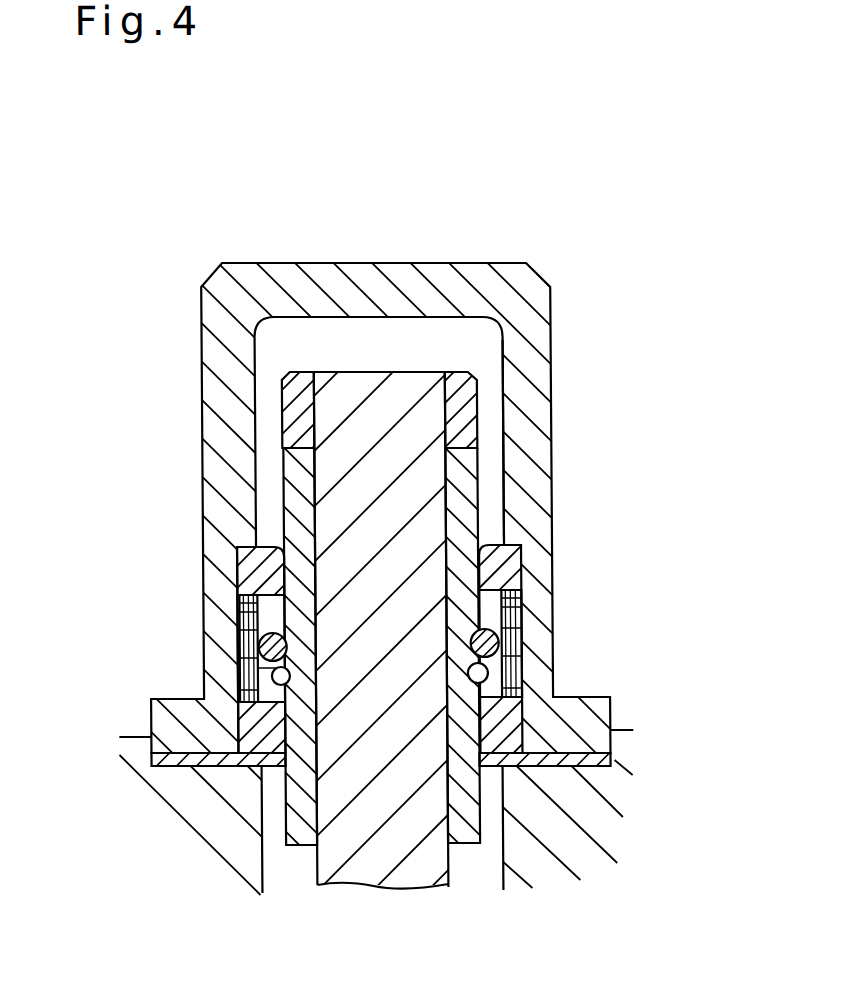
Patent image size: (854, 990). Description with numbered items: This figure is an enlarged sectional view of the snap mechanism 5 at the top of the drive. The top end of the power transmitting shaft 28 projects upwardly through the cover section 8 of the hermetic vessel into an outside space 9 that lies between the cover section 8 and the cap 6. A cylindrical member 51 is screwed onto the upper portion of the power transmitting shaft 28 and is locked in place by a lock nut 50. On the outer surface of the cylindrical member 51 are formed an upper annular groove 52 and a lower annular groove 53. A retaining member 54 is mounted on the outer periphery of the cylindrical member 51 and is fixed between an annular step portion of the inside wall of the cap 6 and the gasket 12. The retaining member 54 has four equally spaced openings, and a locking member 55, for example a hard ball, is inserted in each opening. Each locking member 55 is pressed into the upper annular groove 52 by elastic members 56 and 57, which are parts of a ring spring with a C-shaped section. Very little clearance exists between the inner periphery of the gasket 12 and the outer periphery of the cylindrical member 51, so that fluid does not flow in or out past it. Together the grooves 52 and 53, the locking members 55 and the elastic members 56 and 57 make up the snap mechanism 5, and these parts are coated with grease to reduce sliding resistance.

The cap 6 is at (392, 277).
The snap mechanism 5 is at (268, 512).
The outside space 9 is at (487, 380).
The lock nut 50 is at (470, 407).
The power transmitting shaft 28 is at (415, 480).
The cylindrical member 51 is at (465, 521).
The retaining member 54 is at (250, 558).
The elastic member 56 is at (243, 607).
The elastic member 57 is at (515, 601).
The upper annular groove 52 is at (260, 644).
The locking member 55 is at (272, 672).
The lower annular groove 53 is at (485, 677).
The gasket 12 is at (182, 770).
The cover section 8 is at (594, 830).